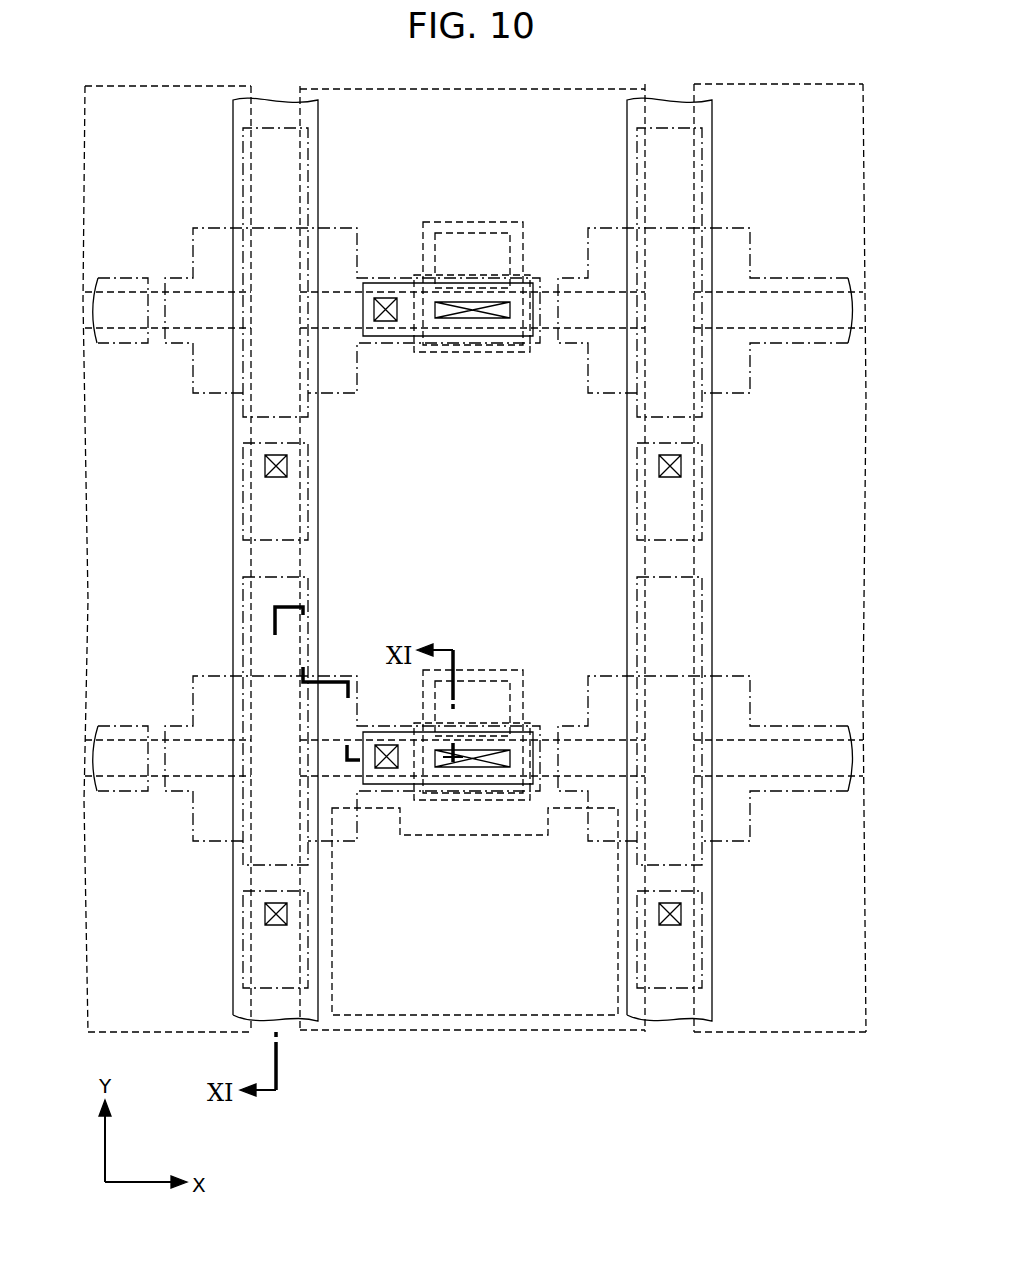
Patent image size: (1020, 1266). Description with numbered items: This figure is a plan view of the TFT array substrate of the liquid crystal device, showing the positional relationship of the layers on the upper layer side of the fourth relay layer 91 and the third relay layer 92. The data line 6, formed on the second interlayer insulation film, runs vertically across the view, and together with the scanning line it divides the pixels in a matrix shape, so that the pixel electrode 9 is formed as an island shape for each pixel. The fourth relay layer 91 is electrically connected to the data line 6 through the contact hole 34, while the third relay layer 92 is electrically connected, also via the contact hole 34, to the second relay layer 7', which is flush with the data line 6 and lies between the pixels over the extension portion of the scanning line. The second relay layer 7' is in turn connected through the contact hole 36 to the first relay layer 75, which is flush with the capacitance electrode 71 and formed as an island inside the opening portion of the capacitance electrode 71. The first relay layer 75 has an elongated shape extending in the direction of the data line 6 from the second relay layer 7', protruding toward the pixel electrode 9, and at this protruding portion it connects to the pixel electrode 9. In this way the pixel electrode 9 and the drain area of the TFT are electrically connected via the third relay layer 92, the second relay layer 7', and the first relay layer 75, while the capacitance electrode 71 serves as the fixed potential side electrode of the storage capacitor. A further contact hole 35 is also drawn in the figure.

The data line 6 is at (233, 170).
The pixel electrode 9 is at (302, 507).
The third relay layer 92 is at (193, 378).
The fourth relay layer 91 is at (243, 470).
The contact hole 34 is at (287, 465).
The contact hole 35 is at (385, 745).
The contact hole 36 is at (478, 768).
The capacitance electrode 71 is at (422, 690).
The first relay layer 75 is at (512, 708).
The second relay layer 7' is at (448, 817).